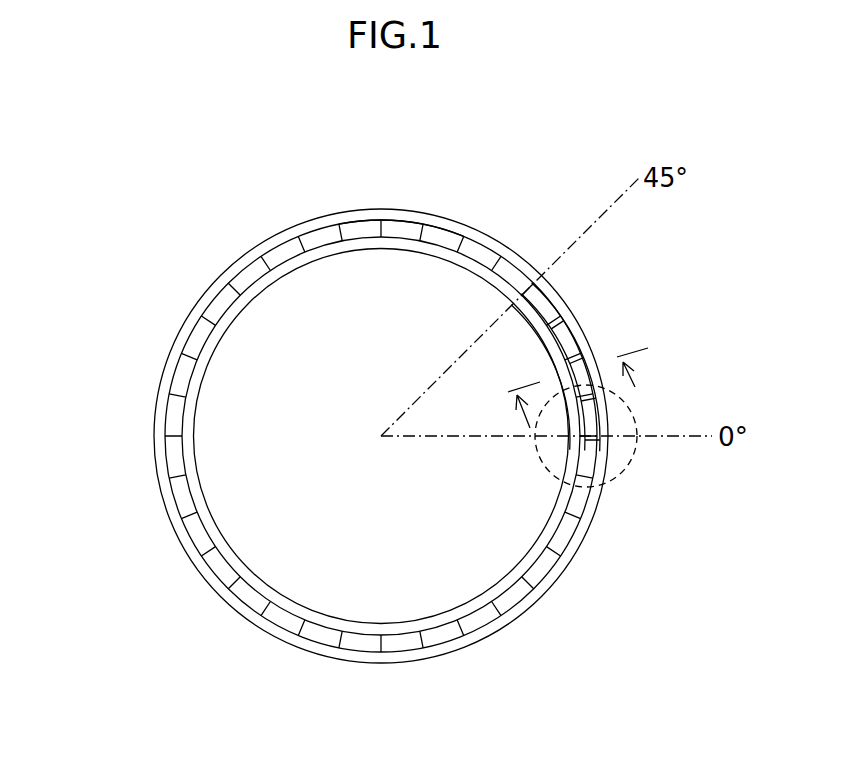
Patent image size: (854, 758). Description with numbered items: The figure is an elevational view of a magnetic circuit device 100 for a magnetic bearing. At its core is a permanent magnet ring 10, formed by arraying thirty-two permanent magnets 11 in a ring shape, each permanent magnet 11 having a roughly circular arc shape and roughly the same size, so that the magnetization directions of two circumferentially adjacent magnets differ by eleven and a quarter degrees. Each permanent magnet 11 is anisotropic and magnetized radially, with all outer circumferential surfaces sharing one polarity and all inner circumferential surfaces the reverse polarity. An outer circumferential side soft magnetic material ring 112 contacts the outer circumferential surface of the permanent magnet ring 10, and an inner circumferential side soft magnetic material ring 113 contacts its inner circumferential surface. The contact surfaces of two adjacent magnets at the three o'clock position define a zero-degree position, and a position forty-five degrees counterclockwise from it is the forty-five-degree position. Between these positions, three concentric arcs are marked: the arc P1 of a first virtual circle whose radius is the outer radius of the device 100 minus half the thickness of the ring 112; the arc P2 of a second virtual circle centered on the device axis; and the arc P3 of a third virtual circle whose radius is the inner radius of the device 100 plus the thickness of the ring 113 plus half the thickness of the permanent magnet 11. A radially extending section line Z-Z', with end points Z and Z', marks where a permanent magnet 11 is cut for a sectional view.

The magnetic circuit device for a magnetic bearing 100 is at (148, 142).
The permanent magnet ring 10 is at (241, 264).
The permanent magnet 11 is at (392, 222).
The outer circumferential side soft magnetic material ring 112 is at (390, 230).
The inner circumferential side soft magnetic material ring 113 is at (444, 248).
The circular arc of the first virtual circle P1 is at (598, 347).
The circular arc of the second virtual circle P2 is at (552, 348).
The circular arc of the third virtual circle P3 is at (565, 292).
The section line Z-Z' end point Z is at (515, 410).
The section line Z-Z' end point Z' is at (644, 368).